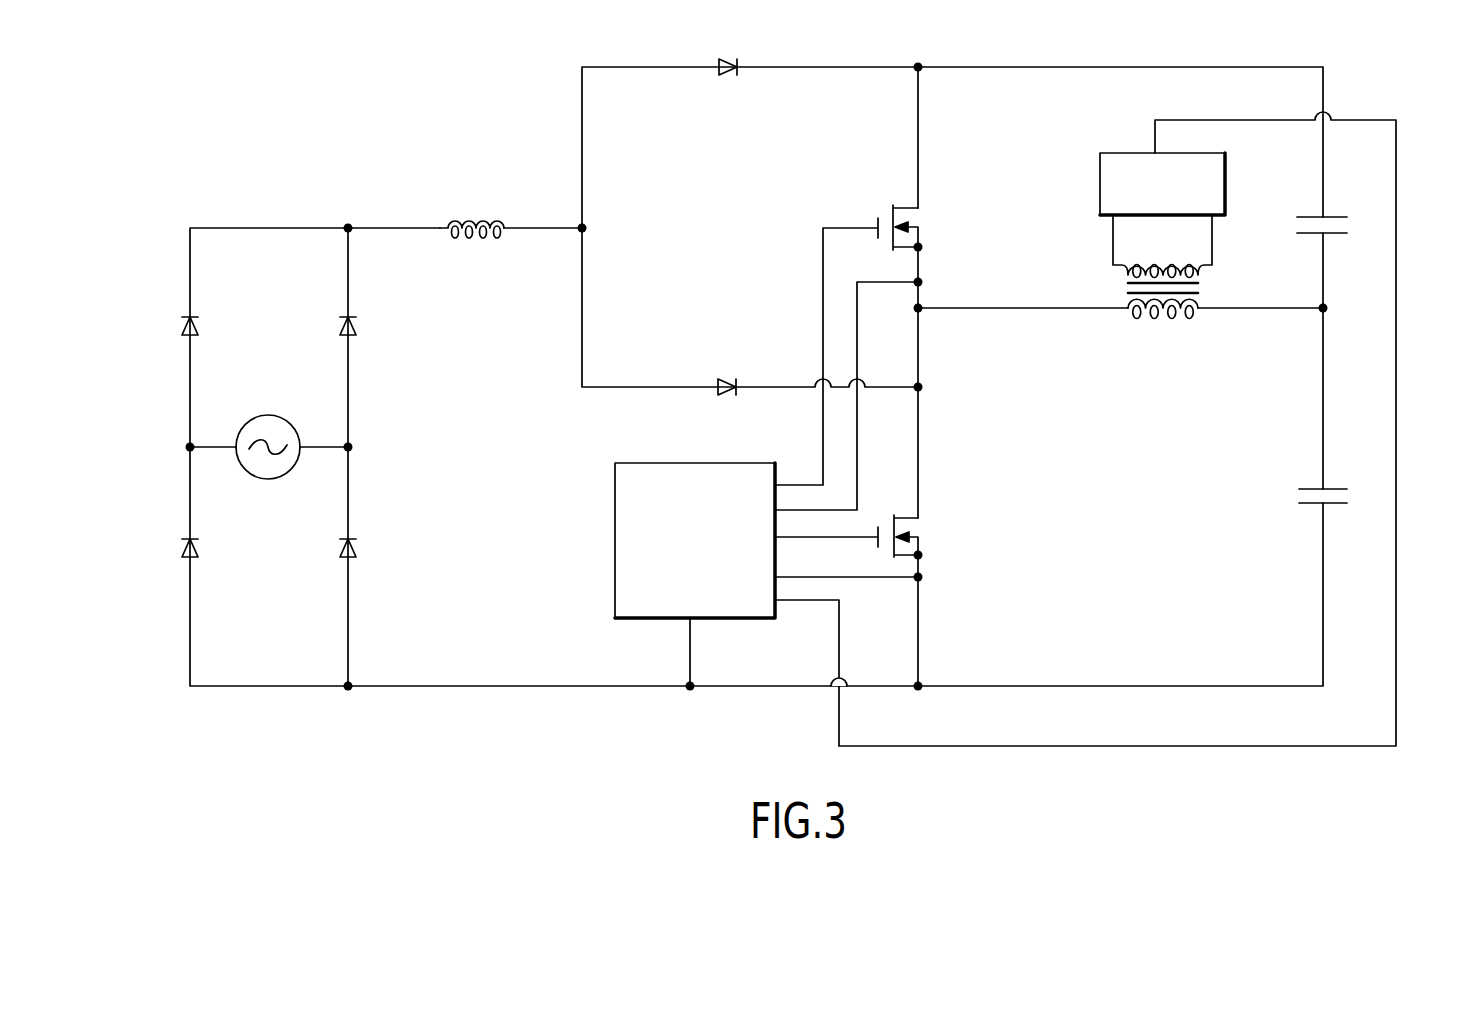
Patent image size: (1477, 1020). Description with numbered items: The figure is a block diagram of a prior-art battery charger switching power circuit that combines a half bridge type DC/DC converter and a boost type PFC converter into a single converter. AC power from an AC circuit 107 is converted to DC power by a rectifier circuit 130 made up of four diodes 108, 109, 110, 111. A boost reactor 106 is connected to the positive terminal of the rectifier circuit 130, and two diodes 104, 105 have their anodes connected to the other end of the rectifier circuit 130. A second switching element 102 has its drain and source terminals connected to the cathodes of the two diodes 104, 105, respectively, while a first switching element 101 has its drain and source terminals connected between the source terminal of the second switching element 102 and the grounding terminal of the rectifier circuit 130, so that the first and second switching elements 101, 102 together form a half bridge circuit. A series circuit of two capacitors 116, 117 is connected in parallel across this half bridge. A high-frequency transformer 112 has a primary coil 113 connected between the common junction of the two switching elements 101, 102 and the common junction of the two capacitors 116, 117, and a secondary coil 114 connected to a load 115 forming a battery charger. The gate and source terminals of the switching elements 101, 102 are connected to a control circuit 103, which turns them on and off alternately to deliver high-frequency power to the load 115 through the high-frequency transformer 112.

The first switching element 101 is at (925, 548).
The second switching element 102 is at (922, 240).
The control circuit 103 is at (700, 462).
The diode 104 is at (726, 74).
The diode 105 is at (722, 383).
The boost reactor 106 is at (470, 238).
The AC circuit 107 is at (263, 416).
The diode 108 is at (183, 322).
The diode 109 is at (183, 546).
The diode 110 is at (343, 318).
The diode 111 is at (352, 540).
The high-frequency transformer 112 is at (1207, 314).
The primary coil 113 is at (1152, 318).
The secondary coil 114 is at (1162, 264).
The load 115 is at (1225, 183).
The capacitor 116 is at (1332, 236).
The capacitor 117 is at (1333, 482).
The rectifier circuit 130 is at (277, 670).